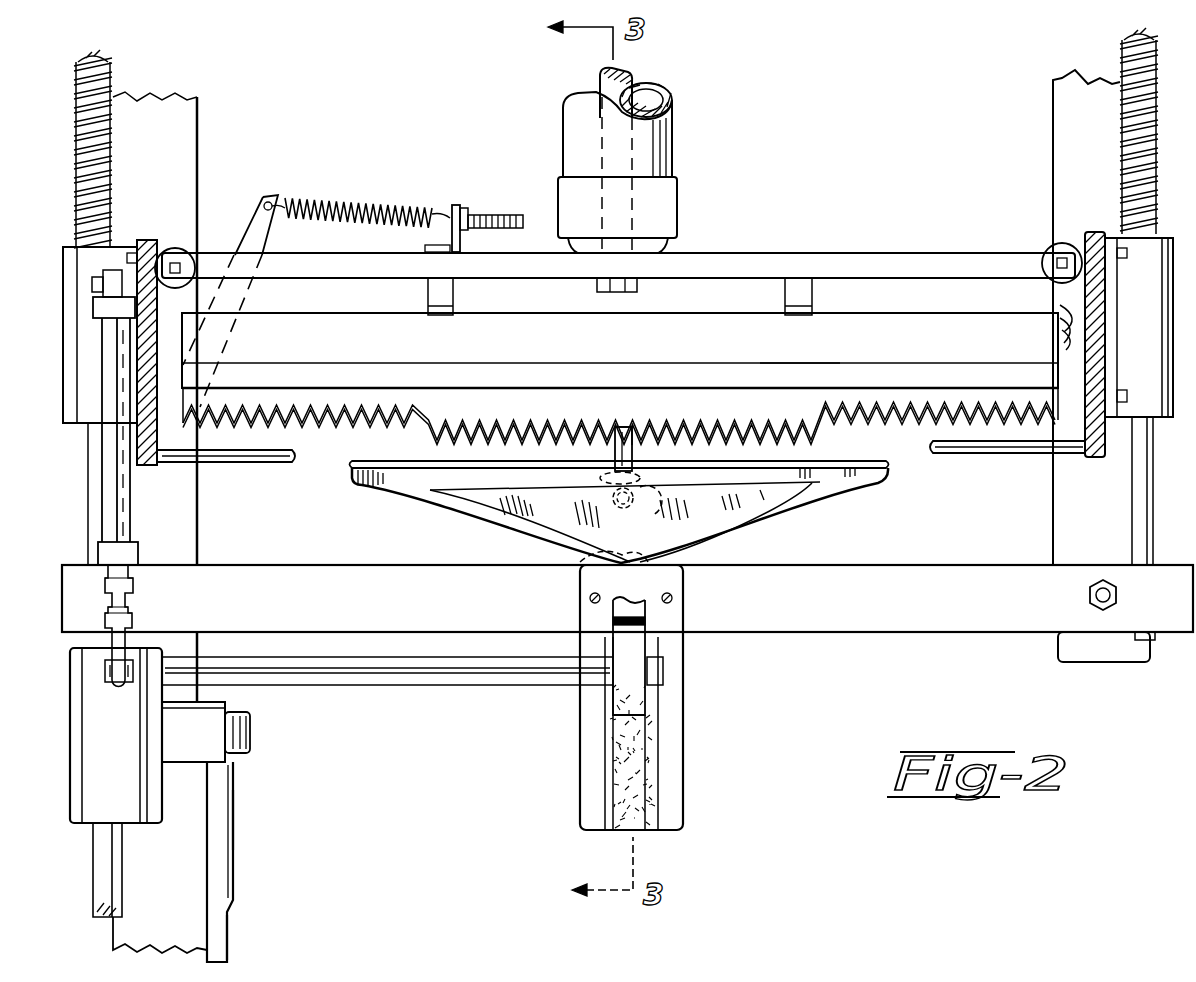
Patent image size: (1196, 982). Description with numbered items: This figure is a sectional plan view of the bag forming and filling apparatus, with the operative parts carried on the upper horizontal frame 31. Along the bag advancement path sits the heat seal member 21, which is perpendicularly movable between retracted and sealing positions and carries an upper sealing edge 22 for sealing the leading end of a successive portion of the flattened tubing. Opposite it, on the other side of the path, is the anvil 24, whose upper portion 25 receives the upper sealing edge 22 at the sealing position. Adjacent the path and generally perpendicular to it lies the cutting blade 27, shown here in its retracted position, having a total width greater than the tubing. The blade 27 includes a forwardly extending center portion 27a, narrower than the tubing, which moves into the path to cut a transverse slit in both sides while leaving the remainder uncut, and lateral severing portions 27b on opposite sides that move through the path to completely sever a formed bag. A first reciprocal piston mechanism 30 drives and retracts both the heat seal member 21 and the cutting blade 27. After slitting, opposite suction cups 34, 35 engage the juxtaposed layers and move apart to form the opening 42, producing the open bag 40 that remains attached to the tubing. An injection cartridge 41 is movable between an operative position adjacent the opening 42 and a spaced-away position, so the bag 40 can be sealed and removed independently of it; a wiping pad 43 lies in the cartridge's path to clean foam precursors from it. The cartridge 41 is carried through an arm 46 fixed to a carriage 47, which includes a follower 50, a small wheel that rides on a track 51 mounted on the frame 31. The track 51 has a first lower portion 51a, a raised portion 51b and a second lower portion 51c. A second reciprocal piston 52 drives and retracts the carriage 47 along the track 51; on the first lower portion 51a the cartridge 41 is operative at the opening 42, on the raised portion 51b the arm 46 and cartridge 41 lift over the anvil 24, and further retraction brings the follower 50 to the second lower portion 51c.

The heat seal member 21 is at (924, 316).
The upper sealing edge 22 is at (797, 388).
The anvil 24 is at (880, 623).
The upper portion of anvil 25 is at (820, 553).
The cutting blade 27 is at (627, 375).
The forwardly extending center portion 27a is at (628, 417).
The lateral severing portions 27b is at (358, 400).
The first reciprocal piston mechanism 30 is at (673, 135).
The upper horizontal frame 31 is at (182, 139).
The suction cup 34 is at (580, 562).
The suction cup 35 is at (598, 470).
The open bag 40 is at (619, 530).
The injection cartridge 41 is at (653, 513).
The opening 42 is at (540, 517).
The wiping pad 43 is at (610, 753).
The arm 46 is at (465, 672).
The carriage 47 is at (155, 775).
The follower 50 is at (248, 732).
The track 51 is at (222, 853).
The first lower portion 51a is at (222, 703).
The raised portion 51b is at (232, 815).
The second lower portion 51c is at (228, 937).
The second reciprocal piston 52 is at (110, 480).